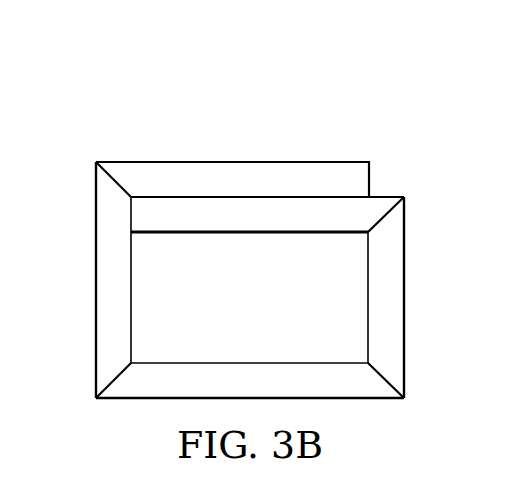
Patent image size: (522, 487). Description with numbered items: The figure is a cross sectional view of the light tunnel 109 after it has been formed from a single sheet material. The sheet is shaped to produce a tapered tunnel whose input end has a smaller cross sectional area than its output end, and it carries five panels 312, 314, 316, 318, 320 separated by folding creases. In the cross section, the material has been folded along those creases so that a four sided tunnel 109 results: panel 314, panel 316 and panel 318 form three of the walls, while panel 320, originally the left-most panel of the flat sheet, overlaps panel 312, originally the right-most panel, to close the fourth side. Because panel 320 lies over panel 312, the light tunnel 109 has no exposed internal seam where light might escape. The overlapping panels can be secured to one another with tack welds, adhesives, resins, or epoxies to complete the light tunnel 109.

The light tunnel 109 is at (249, 209).
The panel 312 is at (236, 222).
The panel 314 is at (395, 298).
The panel 316 is at (263, 372).
The panel 318 is at (105, 280).
The panel 320 is at (236, 170).